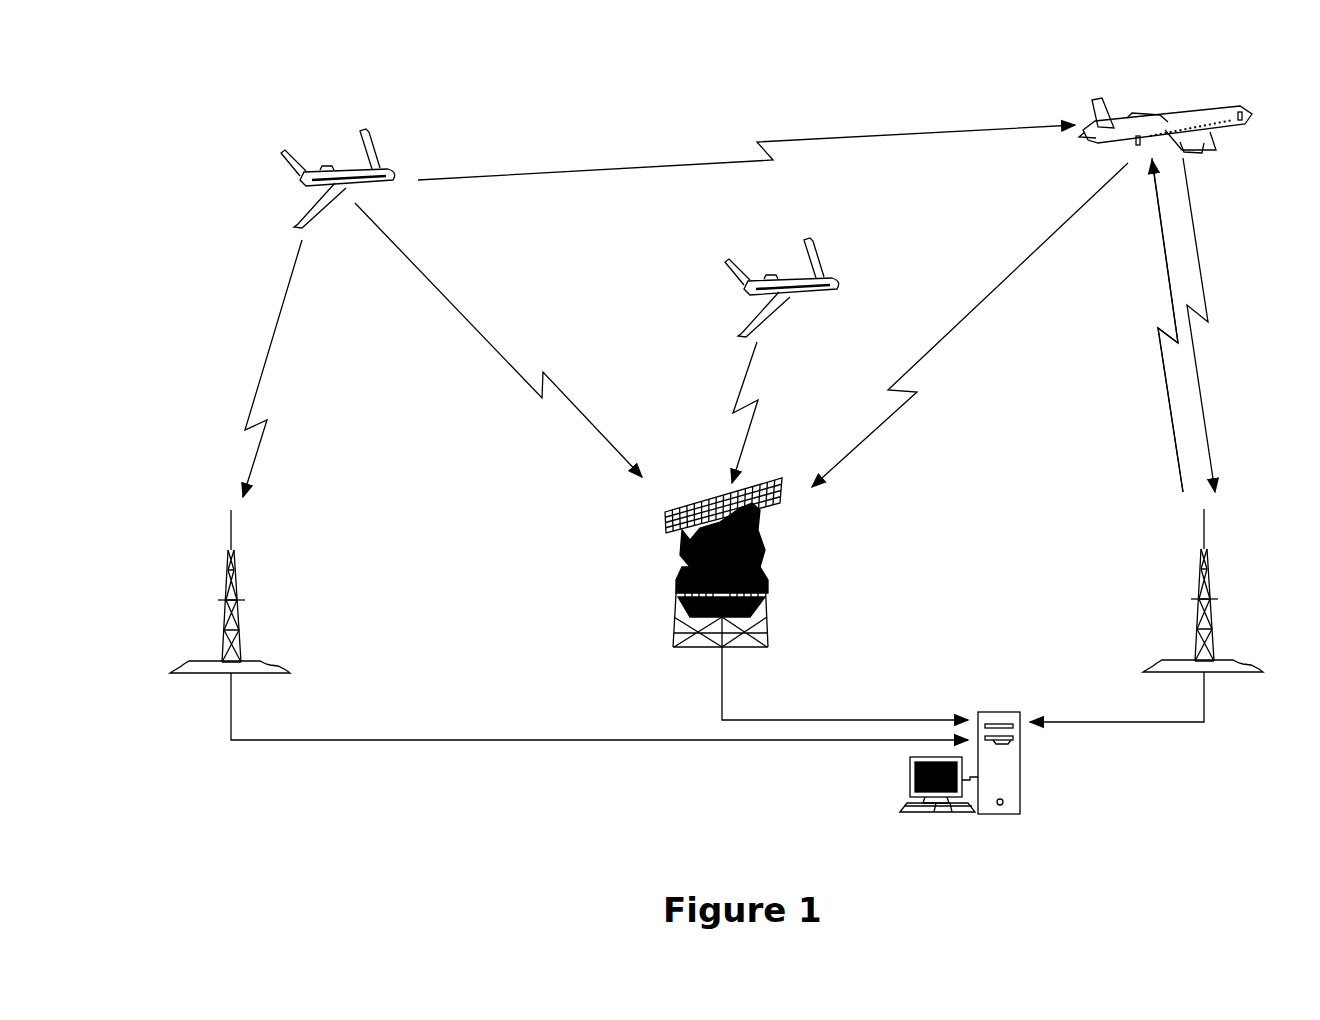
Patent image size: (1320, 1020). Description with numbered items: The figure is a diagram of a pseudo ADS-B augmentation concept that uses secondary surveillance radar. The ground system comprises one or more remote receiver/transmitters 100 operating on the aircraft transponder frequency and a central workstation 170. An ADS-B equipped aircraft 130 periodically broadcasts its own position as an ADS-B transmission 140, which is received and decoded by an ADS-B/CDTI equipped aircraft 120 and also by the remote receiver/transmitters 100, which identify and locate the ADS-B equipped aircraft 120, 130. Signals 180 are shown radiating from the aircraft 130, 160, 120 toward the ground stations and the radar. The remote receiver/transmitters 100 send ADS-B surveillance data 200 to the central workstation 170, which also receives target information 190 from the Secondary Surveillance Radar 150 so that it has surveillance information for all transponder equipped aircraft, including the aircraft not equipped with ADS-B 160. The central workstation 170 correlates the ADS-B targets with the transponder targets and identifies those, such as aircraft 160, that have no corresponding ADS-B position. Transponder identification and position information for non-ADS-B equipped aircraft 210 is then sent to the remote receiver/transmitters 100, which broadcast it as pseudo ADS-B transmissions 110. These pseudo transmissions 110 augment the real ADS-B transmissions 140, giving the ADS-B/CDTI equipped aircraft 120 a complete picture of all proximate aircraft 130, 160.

The 1090 MHz remote receiver/transmitter 100 is at (1243, 603).
The 1090 MHz pseudo ADS-B transmission 110 is at (1170, 292).
The ADS-B/CDTI equipped aircraft 120 is at (1168, 115).
The ADS-B equipped aircraft 130 is at (375, 168).
The 1090 MHz ADS-B transmission 140 is at (690, 158).
The Secondary Surveillance Radar (SSR) 150 is at (768, 578).
The aircraft not equipped with ADS-B 160 is at (822, 272).
The central workstation 170 is at (1020, 768).
The position signal 180 is at (268, 360).
The target information 190 is at (725, 698).
The ADS-B surveillance data 200 is at (230, 722).
The transponder identification and position information for non-ADS-B equipped aircr 210 is at (1180, 724).